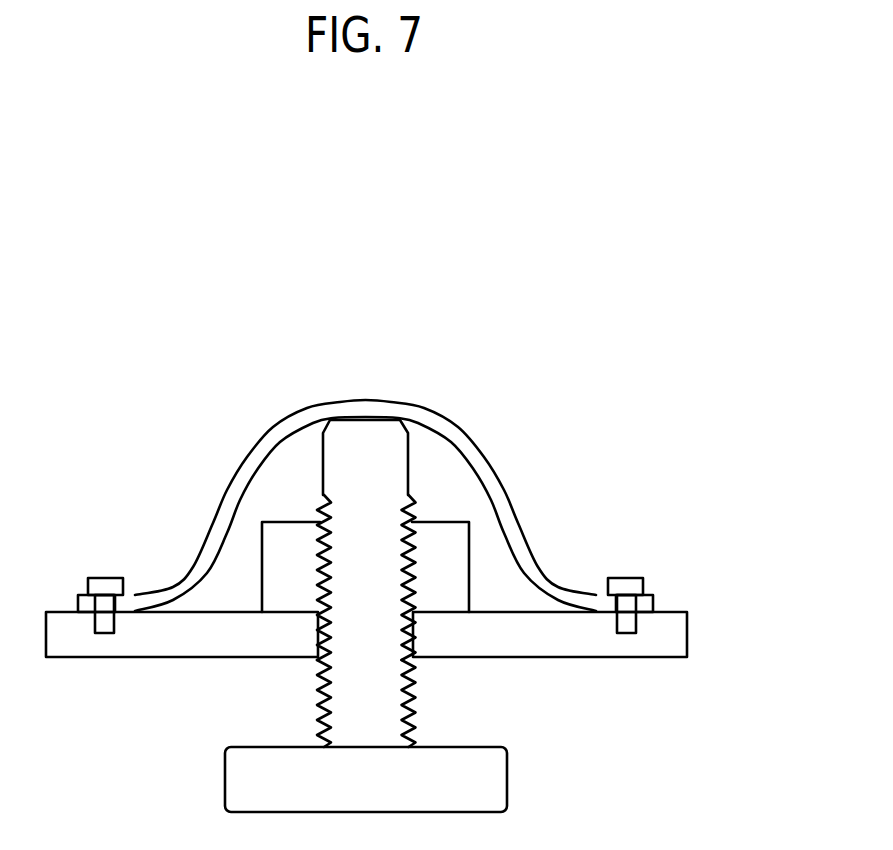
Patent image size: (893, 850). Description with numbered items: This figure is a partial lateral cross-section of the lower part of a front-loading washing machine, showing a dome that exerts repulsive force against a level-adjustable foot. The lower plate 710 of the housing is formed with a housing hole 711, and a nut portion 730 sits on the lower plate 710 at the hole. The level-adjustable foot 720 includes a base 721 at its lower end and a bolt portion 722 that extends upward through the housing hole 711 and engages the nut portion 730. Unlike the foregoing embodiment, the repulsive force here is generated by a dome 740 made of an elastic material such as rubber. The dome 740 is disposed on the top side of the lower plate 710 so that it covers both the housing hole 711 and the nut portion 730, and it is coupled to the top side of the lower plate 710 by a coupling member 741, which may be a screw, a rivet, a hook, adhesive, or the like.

The lower plate 710 is at (683, 637).
The housing hole 711 is at (412, 625).
The level-adjustable foot 720 is at (122, 710).
The base 721 is at (225, 778).
The bolt portion 722 is at (327, 708).
The nut portion 730 is at (270, 530).
The dome 740 is at (362, 403).
The coupling member 741 is at (103, 582).